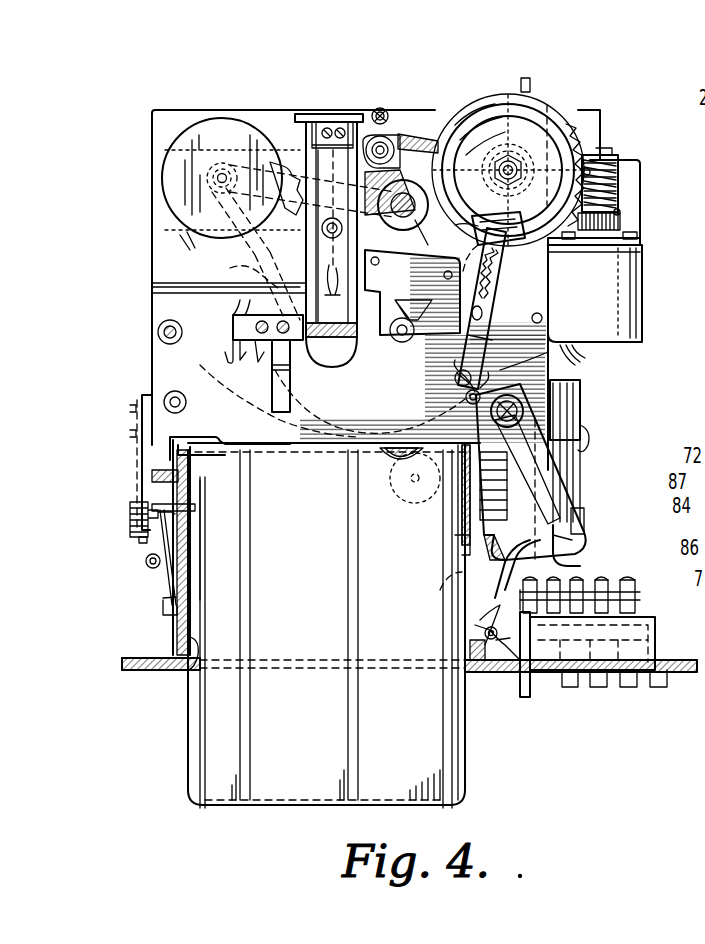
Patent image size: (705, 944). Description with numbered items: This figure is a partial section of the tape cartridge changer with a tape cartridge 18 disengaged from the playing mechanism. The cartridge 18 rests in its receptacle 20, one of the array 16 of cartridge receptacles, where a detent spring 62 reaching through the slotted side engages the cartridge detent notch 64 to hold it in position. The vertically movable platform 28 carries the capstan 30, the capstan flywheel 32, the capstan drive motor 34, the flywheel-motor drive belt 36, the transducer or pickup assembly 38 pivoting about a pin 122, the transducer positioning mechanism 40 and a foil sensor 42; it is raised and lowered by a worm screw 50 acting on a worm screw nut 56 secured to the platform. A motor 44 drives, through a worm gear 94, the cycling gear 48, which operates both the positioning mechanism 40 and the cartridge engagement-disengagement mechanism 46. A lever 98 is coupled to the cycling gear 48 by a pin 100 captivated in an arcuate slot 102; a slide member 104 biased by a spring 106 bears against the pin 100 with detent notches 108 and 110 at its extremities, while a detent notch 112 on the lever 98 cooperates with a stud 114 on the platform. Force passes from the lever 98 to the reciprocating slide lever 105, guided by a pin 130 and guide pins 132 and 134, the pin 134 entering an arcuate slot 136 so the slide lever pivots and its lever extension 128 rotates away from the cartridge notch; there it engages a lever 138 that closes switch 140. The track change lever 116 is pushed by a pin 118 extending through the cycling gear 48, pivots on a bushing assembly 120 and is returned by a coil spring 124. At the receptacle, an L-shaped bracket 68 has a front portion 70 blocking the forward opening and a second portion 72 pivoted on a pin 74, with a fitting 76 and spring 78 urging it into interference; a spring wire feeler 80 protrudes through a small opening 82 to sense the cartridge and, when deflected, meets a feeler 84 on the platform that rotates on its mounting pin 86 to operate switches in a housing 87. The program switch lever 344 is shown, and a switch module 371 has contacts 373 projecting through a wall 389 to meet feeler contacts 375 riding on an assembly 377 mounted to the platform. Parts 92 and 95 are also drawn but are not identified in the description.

The array of cartridge receptacles 16 is at (180, 675).
The tape cartridge 18 is at (305, 783).
The receptacle 20 is at (192, 680).
The vertically movable platform 28 is at (152, 132).
The capstan 30 is at (400, 342).
The capstan flywheel 32 is at (335, 428).
The capstan drive motor 34 is at (175, 180).
The flywheel-motor drive belt 36 is at (230, 267).
The transducer or pickup assembly 38 is at (348, 345).
The transducer positioning mechanism 40 is at (290, 158).
The foil sensor 42 is at (236, 358).
The motor 44 is at (625, 278).
The cartridge engagement-disengagement mechanism 46 is at (575, 545).
The cycling gear 48 is at (578, 170).
The worm screw 50 is at (402, 232).
The worm screw nut 56 is at (420, 268).
The detent spring 62 is at (462, 545).
The detent notch 64 is at (433, 592).
The L-shaped bracket 68 is at (200, 442).
The bracket portion 70 is at (216, 445).
The second portion of L-shaped bracket 72 is at (172, 462).
The pin 74 is at (166, 610).
The fitting 76 is at (145, 563).
The spring 78 is at (158, 575).
The spring wire feeler 80 is at (192, 508).
The small opening 82 is at (196, 505).
The feeler 84 is at (150, 520).
The mounting pin 86 is at (139, 540).
The housing 87 is at (130, 478).
The screw 92 is at (378, 108).
The worm gear 94 is at (620, 178).
The drive gear 95 is at (493, 98).
The lever 98 is at (618, 212).
The pin 100 is at (485, 278).
The arcuate slot 102 is at (500, 222).
The slide member 104 is at (520, 362).
The reciprocating slide lever 105 is at (538, 392).
The spring 106 is at (548, 296).
The detent notch 108 is at (556, 258).
The detent notch 110 is at (467, 222).
The detent notch 112 is at (432, 236).
The stud 114 is at (530, 85).
The track change lever 116 is at (418, 135).
The pin 118 is at (589, 168).
The bushing assembly 120 is at (393, 135).
The pin 122 is at (310, 122).
The coil spring 124 is at (352, 112).
The lever extension 128 is at (578, 566).
The pin 130 is at (582, 410).
The guide pin 132 is at (545, 315).
The guide pin 134 is at (464, 399).
The arcuate slot 136 is at (582, 400).
The lever 138 is at (585, 520).
The switch 140 is at (590, 438).
The program switch lever 344 is at (525, 678).
The switch module 371 is at (645, 662).
The contacts 373 is at (655, 624).
The feeler contacts 375 is at (640, 602).
The assembly 377 is at (637, 588).
The wall 389 is at (552, 625).